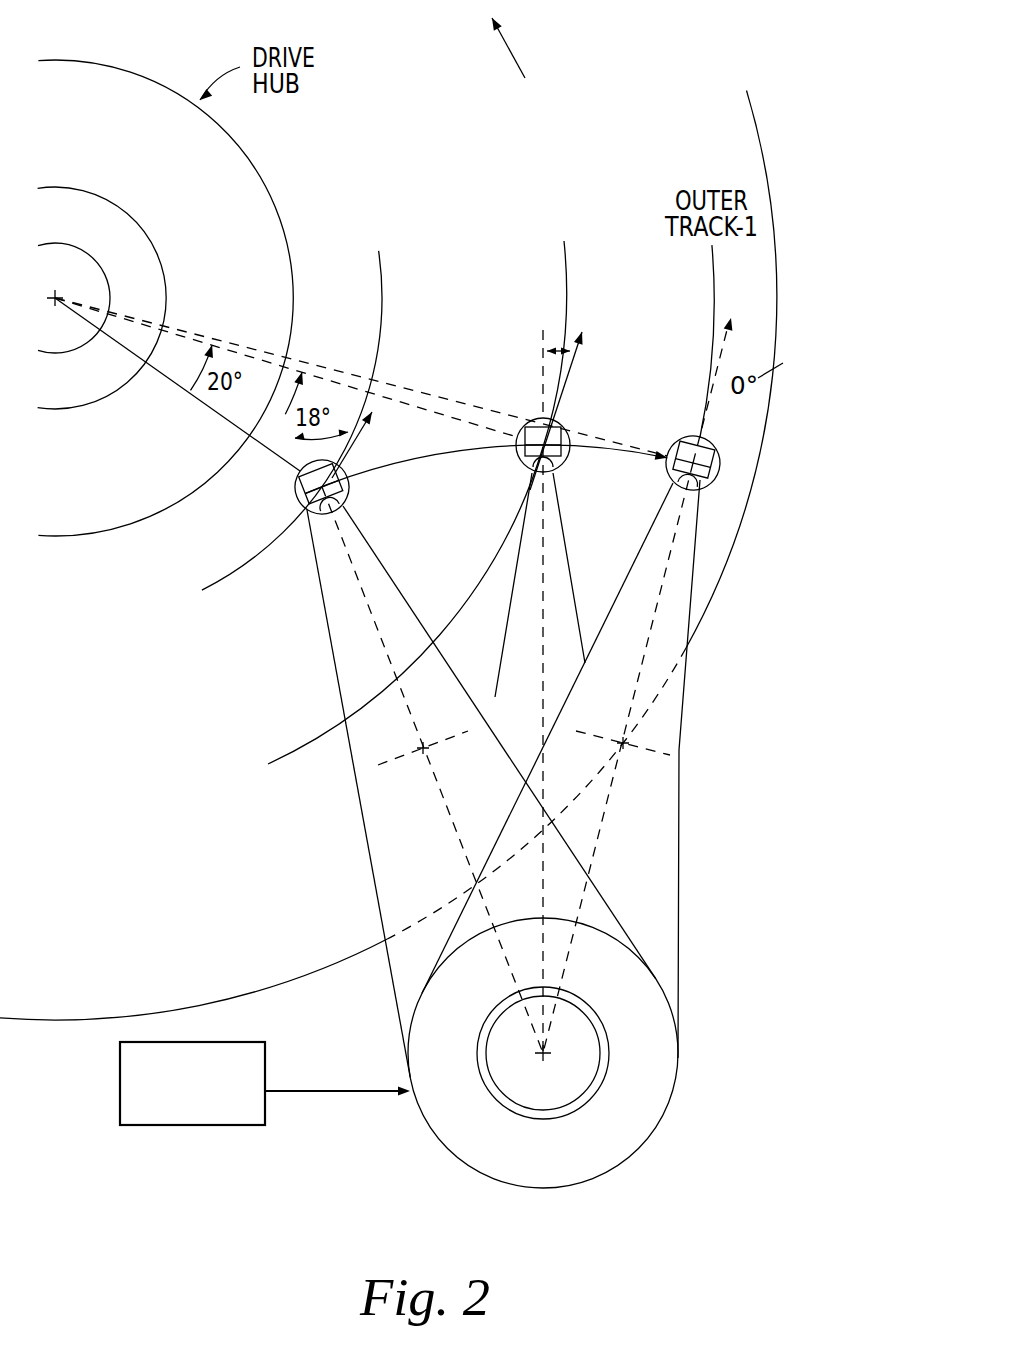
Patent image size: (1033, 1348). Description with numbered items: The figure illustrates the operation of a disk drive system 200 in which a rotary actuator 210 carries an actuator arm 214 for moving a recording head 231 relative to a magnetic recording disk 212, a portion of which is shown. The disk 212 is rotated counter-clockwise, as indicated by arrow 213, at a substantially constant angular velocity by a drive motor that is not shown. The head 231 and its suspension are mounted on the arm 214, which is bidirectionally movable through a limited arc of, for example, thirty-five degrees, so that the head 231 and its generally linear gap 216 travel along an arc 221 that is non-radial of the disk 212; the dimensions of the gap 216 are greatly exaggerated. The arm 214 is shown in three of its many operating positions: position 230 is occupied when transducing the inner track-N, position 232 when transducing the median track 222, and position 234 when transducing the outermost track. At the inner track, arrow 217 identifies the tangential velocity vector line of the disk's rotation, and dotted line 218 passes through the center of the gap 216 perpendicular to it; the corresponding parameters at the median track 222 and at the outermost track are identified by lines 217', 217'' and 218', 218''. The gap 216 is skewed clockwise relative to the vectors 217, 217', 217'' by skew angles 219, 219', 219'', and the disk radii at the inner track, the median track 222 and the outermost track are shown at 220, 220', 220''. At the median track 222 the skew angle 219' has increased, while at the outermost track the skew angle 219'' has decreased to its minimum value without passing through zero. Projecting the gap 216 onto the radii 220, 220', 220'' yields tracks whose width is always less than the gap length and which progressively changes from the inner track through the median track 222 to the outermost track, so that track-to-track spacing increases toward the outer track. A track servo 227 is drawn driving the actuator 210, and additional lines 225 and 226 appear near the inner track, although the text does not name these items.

The disk drive system 200 is at (785, 808).
The rotary actuator 210 is at (668, 1060).
The magnetic recording disk 212 is at (290, 980).
The arrow indicating direction of disk rotation 213 is at (512, 53).
The actuator arm 214 is at (688, 838).
The gap 216 is at (314, 514).
The tangential velocity vector line 217 is at (384, 401).
The tangential velocity vector line at median track 217' is at (591, 387).
The tangential velocity vector line at outer track-1 217'' is at (779, 335).
The dotted line perpendicular to gap 218 is at (262, 498).
The dotted line perpendicular to gap at median track 218' is at (520, 361).
The dotted line perpendicular to gap at outer track-1 218'' is at (790, 307).
The gap skew angle 219 is at (257, 475).
The gap skew angle at median track 219' is at (525, 304).
The gap skew angle at outer track-1 219'' is at (812, 339).
The disk radius at track-N 220 is at (177, 384).
The disk radius at median track 220' is at (286, 375).
The disk radius at track-1 220'' is at (361, 377).
The arc of head movement 221 is at (407, 462).
The median track 222 is at (570, 273).
The skew reference line 225 is at (308, 363).
The inner track 226 is at (366, 380).
The track servo 227 is at (120, 1083).
The arm position at inner track-N 230 is at (388, 843).
The recording head 231 is at (348, 498).
The arm position at median track 232 is at (528, 549).
The arm position at outer track-1 234 is at (675, 617).